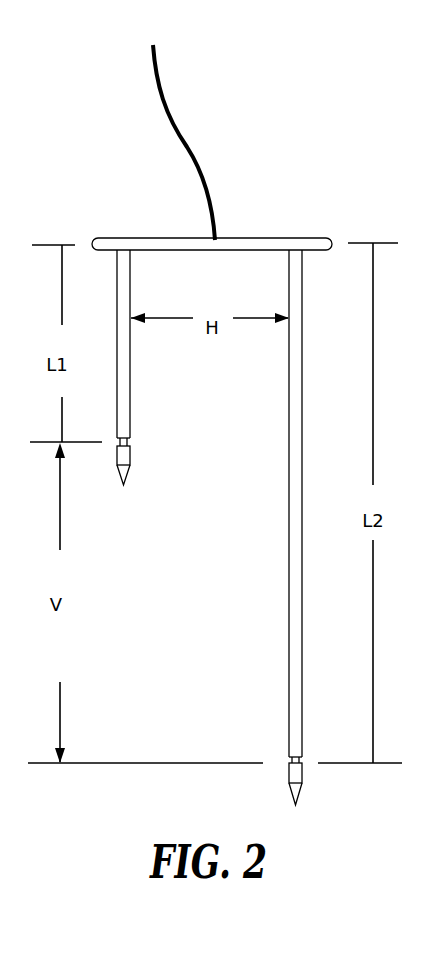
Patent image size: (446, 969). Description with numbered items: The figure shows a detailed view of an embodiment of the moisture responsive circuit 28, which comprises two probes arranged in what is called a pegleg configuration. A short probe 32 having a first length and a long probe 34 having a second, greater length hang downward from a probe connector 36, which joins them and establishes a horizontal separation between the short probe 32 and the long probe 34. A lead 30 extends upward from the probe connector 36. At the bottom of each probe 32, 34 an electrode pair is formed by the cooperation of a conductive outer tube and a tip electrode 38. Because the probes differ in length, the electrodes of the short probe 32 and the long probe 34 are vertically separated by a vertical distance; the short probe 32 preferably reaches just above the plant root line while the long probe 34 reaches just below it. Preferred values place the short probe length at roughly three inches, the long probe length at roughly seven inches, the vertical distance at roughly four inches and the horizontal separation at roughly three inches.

The moisture responsive circuit 28 is at (285, 145).
The suture 30 is at (173, 125).
The short probe 32 is at (125, 365).
The long probe 34 is at (297, 682).
The probe connector 36 is at (137, 243).
The tip electrode 38 is at (141, 447).